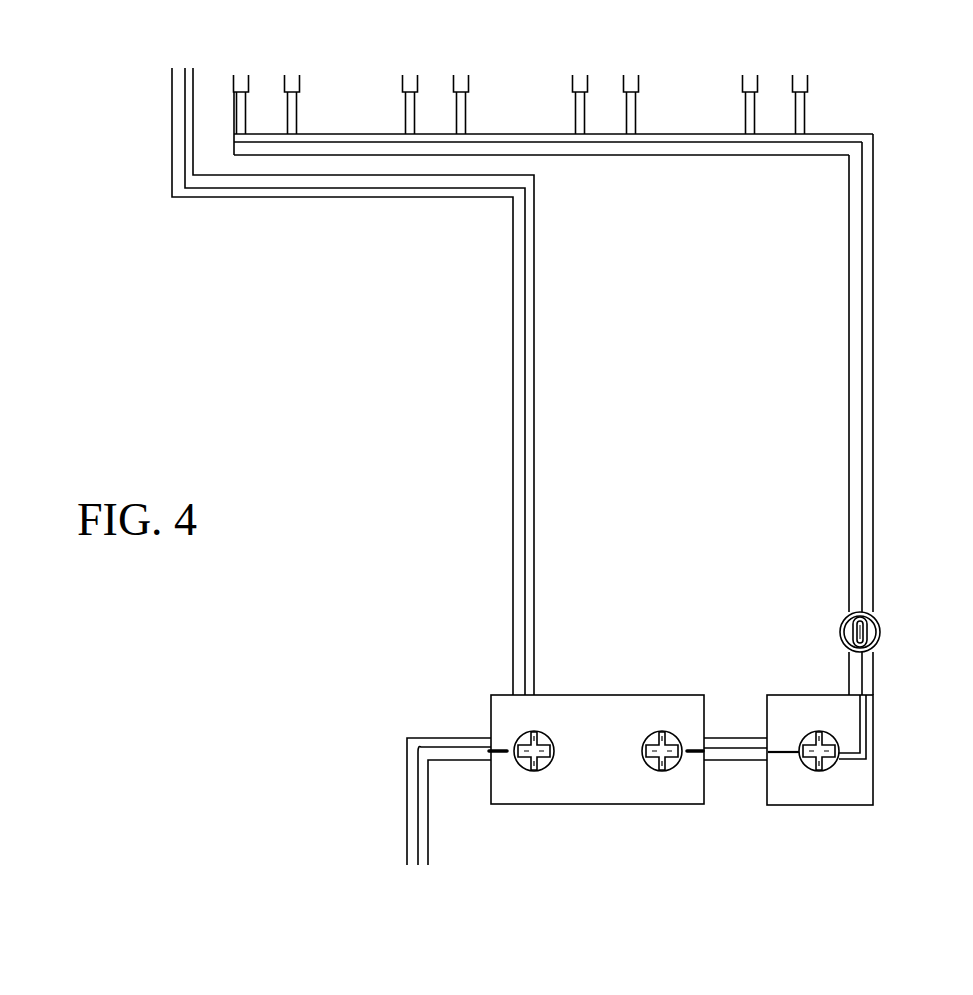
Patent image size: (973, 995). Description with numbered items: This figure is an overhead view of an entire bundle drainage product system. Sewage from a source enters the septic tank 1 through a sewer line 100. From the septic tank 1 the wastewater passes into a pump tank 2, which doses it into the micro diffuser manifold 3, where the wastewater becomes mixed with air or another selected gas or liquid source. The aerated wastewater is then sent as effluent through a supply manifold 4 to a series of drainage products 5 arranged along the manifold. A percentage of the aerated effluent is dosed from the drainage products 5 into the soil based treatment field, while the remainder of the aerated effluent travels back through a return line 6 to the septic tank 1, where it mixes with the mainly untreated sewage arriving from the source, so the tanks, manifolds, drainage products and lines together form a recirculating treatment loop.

The septic tank 1 is at (612, 712).
The pump tank 2 is at (853, 788).
The micro diffuser manifold 3 is at (882, 632).
The supply manifold 4 is at (862, 343).
The drainage products 5 is at (807, 82).
The return line 6 is at (524, 422).
The sewer line 100 is at (418, 813).